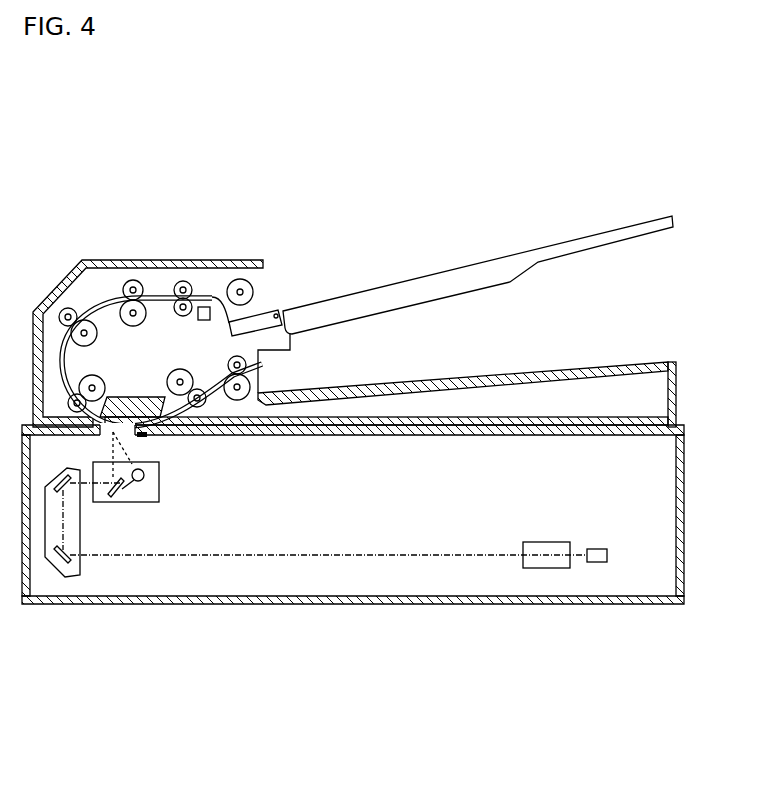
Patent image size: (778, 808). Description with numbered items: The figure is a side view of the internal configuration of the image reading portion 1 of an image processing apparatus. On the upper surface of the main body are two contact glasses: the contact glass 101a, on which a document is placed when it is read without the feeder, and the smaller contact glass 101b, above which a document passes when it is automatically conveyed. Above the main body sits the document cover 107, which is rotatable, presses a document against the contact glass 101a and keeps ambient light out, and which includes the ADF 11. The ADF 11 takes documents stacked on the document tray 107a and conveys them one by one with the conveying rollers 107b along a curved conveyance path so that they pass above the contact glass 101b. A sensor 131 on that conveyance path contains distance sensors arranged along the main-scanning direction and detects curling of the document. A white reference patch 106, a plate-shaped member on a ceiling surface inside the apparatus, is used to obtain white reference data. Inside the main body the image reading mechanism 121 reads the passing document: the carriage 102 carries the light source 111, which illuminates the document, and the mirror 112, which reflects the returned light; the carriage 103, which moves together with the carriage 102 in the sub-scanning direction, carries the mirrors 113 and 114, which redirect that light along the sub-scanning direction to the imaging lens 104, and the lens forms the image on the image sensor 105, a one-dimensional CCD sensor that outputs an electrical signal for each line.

The image reading portion 1 is at (386, 632).
The ADF 11 is at (302, 262).
The contact glass 101a is at (417, 436).
The contact glass 101b is at (103, 434).
The carriage 102 is at (160, 492).
The carriage 103 is at (80, 550).
The imaging lens 104 is at (547, 542).
The image sensor 105 is at (600, 549).
The white reference patch 106 is at (142, 438).
The document cover 107 is at (630, 362).
The document tray 107a is at (368, 291).
The conveying rollers 107b is at (97, 341).
The light source 111 is at (140, 482).
The mirror 112 is at (114, 498).
The mirror 113 is at (55, 480).
The mirror 114 is at (55, 559).
The image reading mechanism 121 is at (602, 585).
The sensor 131 is at (203, 321).